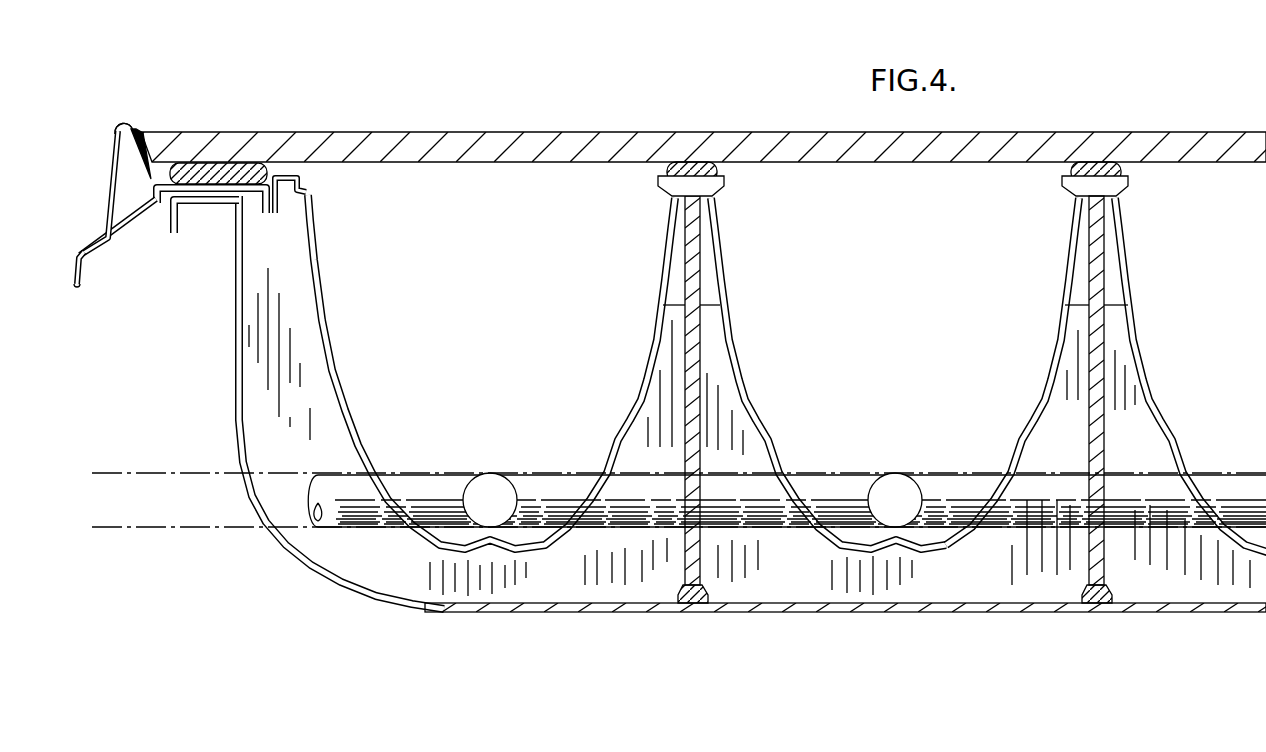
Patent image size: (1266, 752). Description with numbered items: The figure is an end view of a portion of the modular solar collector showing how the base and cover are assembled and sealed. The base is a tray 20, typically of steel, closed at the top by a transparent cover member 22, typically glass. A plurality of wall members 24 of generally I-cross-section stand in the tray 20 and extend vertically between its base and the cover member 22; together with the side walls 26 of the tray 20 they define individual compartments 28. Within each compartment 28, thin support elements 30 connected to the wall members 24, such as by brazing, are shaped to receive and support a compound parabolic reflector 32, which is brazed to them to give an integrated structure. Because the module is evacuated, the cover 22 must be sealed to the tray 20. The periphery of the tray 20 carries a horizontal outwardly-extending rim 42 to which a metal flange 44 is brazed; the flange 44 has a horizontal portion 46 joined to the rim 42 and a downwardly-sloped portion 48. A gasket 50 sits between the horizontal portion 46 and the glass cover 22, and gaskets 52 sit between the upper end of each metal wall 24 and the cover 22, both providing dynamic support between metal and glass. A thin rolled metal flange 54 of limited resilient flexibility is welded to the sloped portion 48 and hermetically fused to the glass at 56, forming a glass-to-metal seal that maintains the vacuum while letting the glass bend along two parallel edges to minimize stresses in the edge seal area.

The tray 20 is at (922, 606).
The cover member 22 is at (975, 143).
The wall member 24 is at (1104, 422).
The side wall 26 is at (236, 332).
The compartment 28 is at (355, 558).
The support element 30 is at (1050, 576).
The reflector 32 is at (1040, 419).
The rim 42 is at (195, 195).
The metal flange 44 is at (137, 226).
The horizontal portion 46 is at (218, 192).
The downwardly-sloped portion 48 is at (99, 256).
The gasket 50 is at (202, 168).
The gasket 52 is at (688, 166).
The rolled metal flange 54 is at (112, 178).
The glass-to-metal seal 56 is at (140, 137).